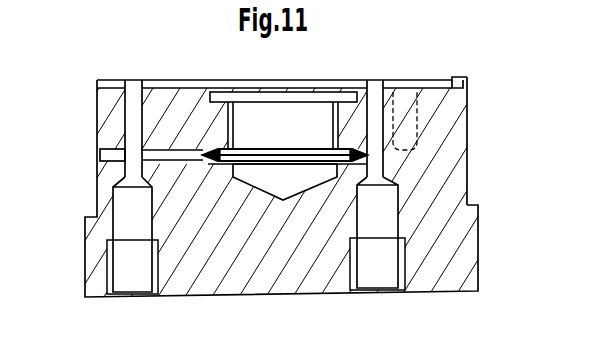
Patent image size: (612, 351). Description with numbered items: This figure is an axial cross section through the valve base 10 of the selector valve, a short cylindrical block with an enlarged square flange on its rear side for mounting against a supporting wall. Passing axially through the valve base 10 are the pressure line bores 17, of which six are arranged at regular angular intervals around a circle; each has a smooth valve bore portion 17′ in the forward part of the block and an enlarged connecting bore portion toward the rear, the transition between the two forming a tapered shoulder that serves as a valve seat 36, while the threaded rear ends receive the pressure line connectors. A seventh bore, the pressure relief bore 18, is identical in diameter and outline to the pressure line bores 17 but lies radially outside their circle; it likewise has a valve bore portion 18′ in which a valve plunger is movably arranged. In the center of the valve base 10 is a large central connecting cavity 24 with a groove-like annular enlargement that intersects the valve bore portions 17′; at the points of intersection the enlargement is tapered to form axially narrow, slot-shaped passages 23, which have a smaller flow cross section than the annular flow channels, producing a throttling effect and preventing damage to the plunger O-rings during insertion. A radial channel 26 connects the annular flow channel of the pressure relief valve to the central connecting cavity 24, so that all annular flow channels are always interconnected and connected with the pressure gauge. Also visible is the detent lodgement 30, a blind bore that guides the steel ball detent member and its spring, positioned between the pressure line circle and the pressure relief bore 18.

The valve base 10 is at (86, 273).
The pressure line bores 17 is at (383, 267).
The valve bore portions 17′ is at (385, 108).
The pressure relief bore 18 is at (133, 257).
The valve bore portion 18′ is at (130, 137).
The slot-shaped passages 23 is at (334, 118).
The central connecting cavity 24 is at (268, 187).
The radial channel 26 is at (178, 125).
The detent lodgement 30 is at (425, 113).
The valve seats 36 is at (420, 193).